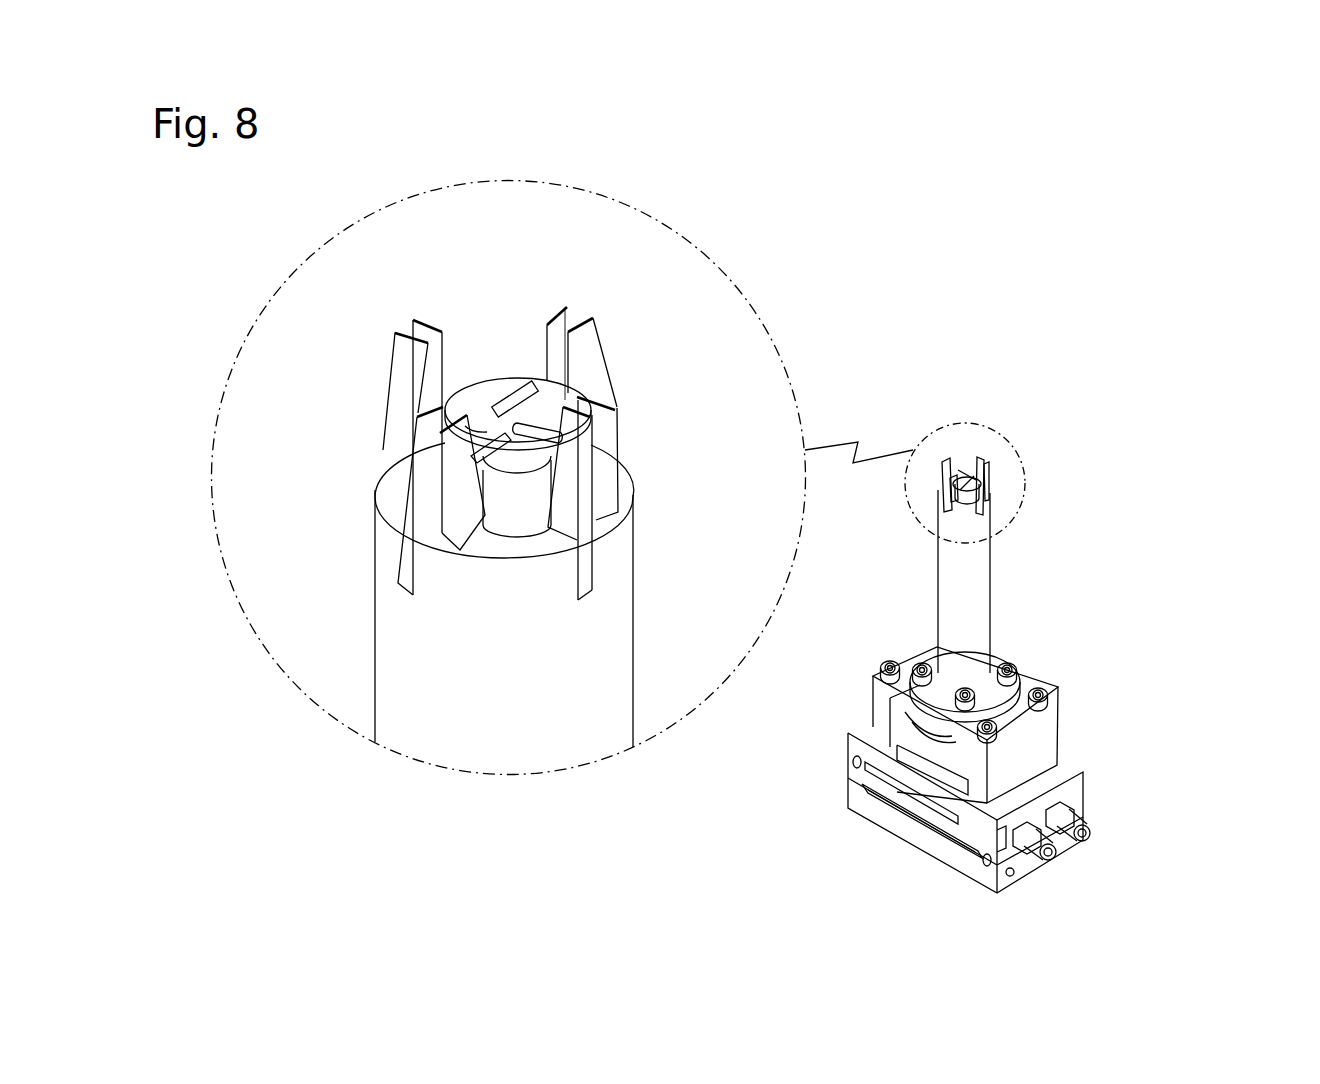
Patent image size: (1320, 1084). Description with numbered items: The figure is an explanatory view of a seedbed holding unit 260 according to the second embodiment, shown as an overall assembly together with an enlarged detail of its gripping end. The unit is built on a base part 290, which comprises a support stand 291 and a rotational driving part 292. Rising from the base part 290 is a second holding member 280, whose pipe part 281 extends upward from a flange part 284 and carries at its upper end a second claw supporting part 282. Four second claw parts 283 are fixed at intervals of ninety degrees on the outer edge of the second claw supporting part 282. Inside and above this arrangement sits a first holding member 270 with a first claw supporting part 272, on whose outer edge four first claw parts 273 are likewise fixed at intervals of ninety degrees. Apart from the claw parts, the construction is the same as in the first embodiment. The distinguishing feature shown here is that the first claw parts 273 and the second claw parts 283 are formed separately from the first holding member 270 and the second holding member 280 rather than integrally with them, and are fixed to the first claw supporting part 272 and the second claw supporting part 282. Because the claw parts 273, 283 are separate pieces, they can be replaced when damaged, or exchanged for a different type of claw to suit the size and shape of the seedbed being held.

The seedbed holding unit 260 is at (1078, 292).
The first holding member 270 is at (478, 386).
The first claw supporting part 272 is at (498, 387).
The first claw part 273 is at (560, 323).
The second holding member 280 is at (381, 534).
The pipe part 281 is at (972, 582).
The second claw supporting part 282 is at (533, 547).
The second claw part 283 is at (420, 333).
The flange part 284 is at (988, 655).
The base part 290 is at (1197, 720).
The support stand 291 is at (1030, 742).
The rotational driving part 292 is at (1053, 797).